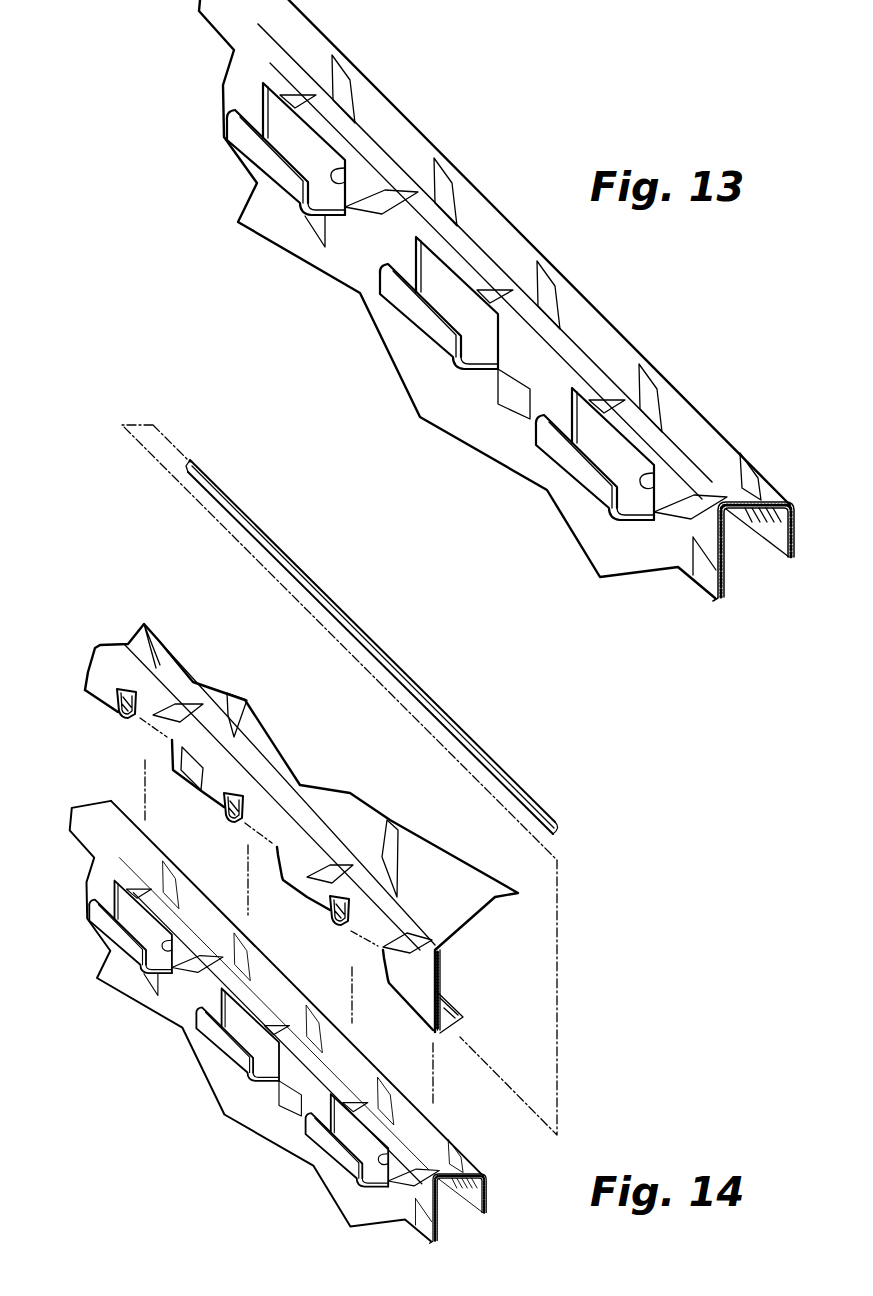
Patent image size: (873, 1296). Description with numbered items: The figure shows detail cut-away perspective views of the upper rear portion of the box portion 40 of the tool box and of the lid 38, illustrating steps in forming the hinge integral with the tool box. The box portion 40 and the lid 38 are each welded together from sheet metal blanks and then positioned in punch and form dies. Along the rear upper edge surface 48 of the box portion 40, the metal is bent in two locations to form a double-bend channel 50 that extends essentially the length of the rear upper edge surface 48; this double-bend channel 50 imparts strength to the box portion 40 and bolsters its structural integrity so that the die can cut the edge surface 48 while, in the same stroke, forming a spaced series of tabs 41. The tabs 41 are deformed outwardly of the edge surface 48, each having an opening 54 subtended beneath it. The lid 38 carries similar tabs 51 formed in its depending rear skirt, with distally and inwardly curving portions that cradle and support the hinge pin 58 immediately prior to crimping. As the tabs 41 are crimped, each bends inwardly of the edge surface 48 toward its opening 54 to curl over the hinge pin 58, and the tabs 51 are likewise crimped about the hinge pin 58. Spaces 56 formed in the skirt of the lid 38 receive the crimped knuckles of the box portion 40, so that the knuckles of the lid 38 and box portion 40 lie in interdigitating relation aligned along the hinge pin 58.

In FIG. 14, the lid 38 is at (312, 772).
In FIG. 13, the box portion 40 is at (377, 58).
In FIG. 14, the box portion 40 is at (178, 1107).
In FIG. 13, the tabs 41 is at (253, 153).
In FIG. 14, the tabs 41 is at (110, 923).
In FIG. 13, the rear upper edge surface 48 is at (230, 82).
In FIG. 14, the rear upper edge surface 48 is at (107, 882).
In FIG. 13, the double-bend channel 50 is at (750, 543).
In FIG. 14, the double-bend channel 50 is at (458, 1198).
In FIG. 14, the tabs 51 is at (98, 678).
In FIG. 13, the opening 54 is at (345, 182).
In FIG. 14, the opening 54 is at (380, 1145).
In FIG. 14, the spaces 56 is at (125, 738).
In FIG. 14, the hinge pin 58 is at (363, 625).